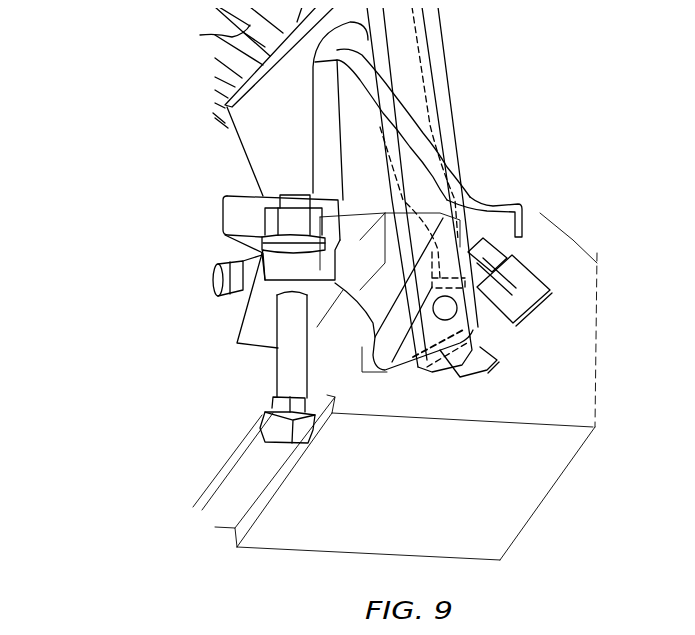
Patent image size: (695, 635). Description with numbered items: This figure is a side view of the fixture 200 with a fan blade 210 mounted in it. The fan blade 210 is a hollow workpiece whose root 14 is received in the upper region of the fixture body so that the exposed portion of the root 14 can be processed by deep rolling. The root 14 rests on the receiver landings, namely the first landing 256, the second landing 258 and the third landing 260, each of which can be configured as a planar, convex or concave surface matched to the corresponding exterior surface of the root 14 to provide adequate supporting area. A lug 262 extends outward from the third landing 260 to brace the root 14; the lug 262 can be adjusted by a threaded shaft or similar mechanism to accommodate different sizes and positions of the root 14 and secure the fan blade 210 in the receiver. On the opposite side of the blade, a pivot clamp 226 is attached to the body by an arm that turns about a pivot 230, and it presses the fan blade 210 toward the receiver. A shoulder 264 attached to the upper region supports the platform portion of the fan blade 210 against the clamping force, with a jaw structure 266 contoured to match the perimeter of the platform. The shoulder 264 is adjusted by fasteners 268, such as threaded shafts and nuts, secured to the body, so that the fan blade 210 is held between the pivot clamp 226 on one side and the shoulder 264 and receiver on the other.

The fixture 200 is at (110, 112).
The fan blade 210 is at (200, 35).
The pivot clamp 226 is at (442, 50).
The root 14 is at (497, 200).
The lug 262 is at (485, 218).
The third landing 260 is at (507, 252).
The pivot 230 is at (440, 307).
The jaw structure 266 is at (243, 198).
The shoulder 264 is at (212, 213).
The fasteners 268 is at (262, 241).
The first landing 256 is at (387, 330).
The second landing 258 is at (392, 368).